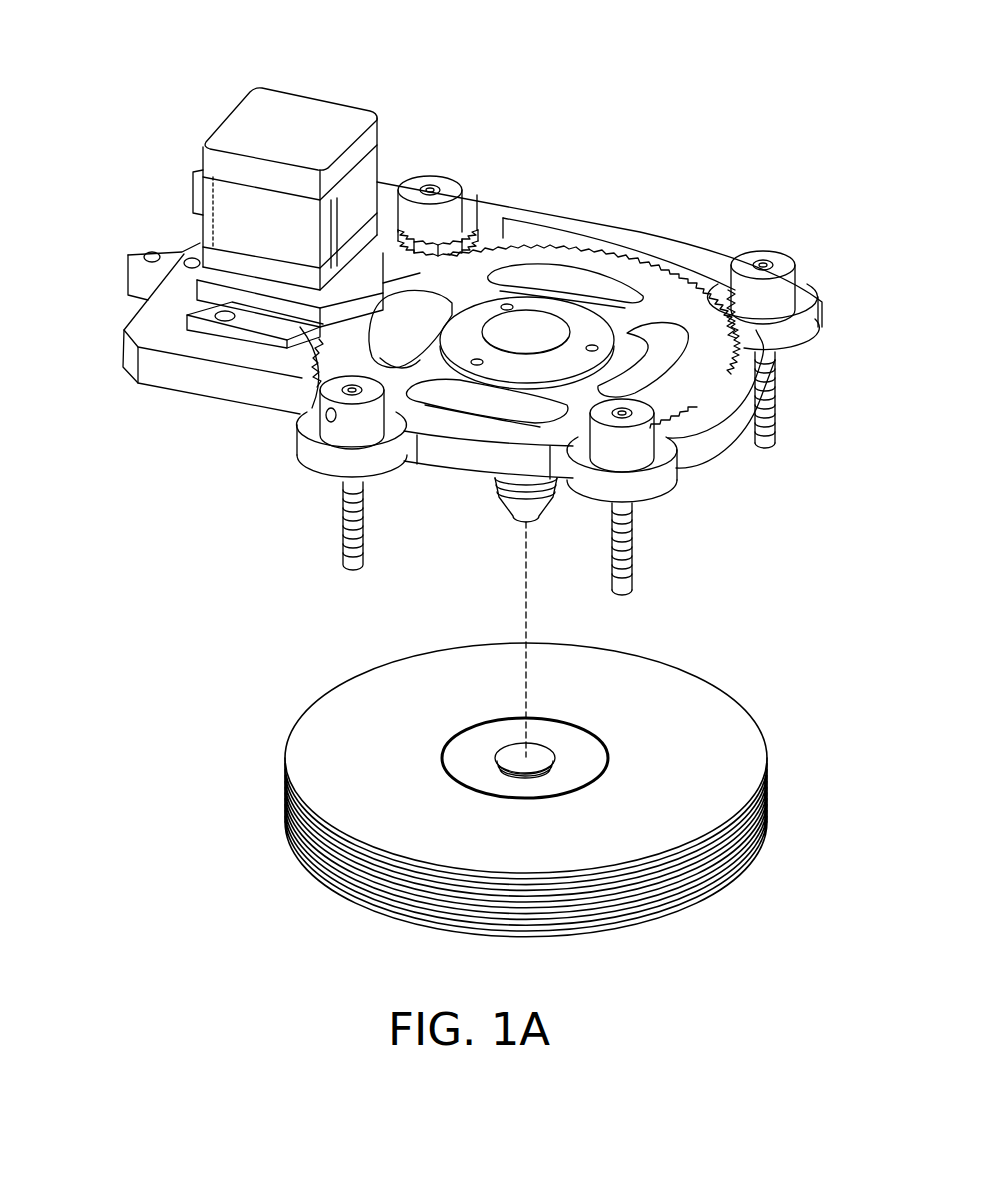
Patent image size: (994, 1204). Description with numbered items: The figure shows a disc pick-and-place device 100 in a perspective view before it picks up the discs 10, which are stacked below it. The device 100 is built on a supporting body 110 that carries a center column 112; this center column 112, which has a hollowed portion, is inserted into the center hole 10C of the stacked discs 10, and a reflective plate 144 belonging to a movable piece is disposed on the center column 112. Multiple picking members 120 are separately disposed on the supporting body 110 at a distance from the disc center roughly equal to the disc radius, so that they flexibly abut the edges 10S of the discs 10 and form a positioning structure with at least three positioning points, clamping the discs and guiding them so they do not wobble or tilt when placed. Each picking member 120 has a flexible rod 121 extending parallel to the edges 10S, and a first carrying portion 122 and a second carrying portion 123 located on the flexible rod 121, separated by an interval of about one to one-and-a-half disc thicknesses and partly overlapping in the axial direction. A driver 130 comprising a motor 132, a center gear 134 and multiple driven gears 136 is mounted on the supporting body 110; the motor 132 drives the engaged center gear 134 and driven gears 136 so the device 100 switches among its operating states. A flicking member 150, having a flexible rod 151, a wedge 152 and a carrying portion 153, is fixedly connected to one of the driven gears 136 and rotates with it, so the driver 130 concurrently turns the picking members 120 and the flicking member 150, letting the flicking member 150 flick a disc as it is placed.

The disc pick-and-place device 100 is at (100, 28).
The discs 10 is at (560, 789).
The center hole 10C is at (541, 748).
The edges of the discs 10S is at (763, 843).
The supporting body 110 is at (533, 208).
The center column 112 is at (542, 508).
The picking member 120 is at (563, 325).
The flexible rod 121 is at (773, 377).
The first carrying portion 122 is at (805, 439).
The second carrying portion 123 is at (780, 433).
The driver 130 is at (829, 55).
The motor 132 is at (300, 113).
The center gear 134 is at (655, 282).
The driven gears 136 is at (455, 227).
The reflective plate 144 is at (545, 325).
The flicking member 150 is at (690, 554).
The flexible rod 151 is at (632, 522).
The wedge 152 is at (632, 580).
The carrying portion 153 is at (666, 589).